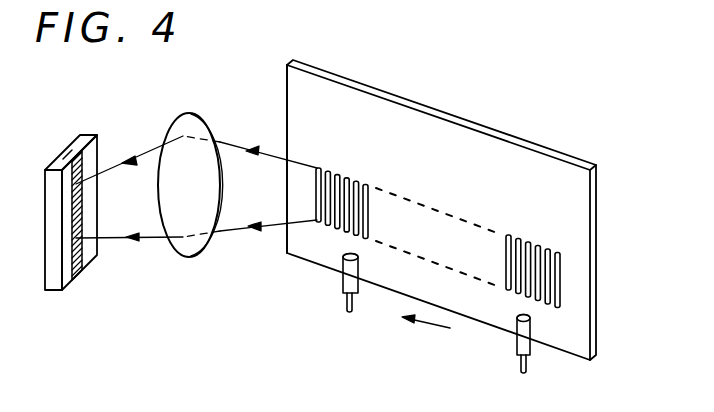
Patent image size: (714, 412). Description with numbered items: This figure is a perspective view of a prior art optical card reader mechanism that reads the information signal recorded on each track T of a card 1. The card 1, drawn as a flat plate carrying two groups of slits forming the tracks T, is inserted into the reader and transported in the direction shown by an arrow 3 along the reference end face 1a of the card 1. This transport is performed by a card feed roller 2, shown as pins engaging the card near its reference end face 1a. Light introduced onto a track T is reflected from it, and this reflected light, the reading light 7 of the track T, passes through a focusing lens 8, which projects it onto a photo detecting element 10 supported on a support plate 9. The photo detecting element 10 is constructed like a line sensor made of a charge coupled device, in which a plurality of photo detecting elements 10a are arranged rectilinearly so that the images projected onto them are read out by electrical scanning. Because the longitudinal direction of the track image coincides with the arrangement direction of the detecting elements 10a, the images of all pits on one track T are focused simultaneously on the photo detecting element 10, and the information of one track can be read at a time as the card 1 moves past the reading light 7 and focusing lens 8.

The card 1 is at (490, 153).
The reference end face 1a is at (292, 257).
The card feed roller 2 is at (343, 278).
The arrow 3 is at (430, 324).
The reading light 7 is at (153, 243).
The focusing lens 8 is at (220, 243).
The support plate 9 is at (50, 292).
The photo detecting element 10 is at (77, 273).
The photo detecting elements 10a is at (84, 163).
The track T is at (330, 172).